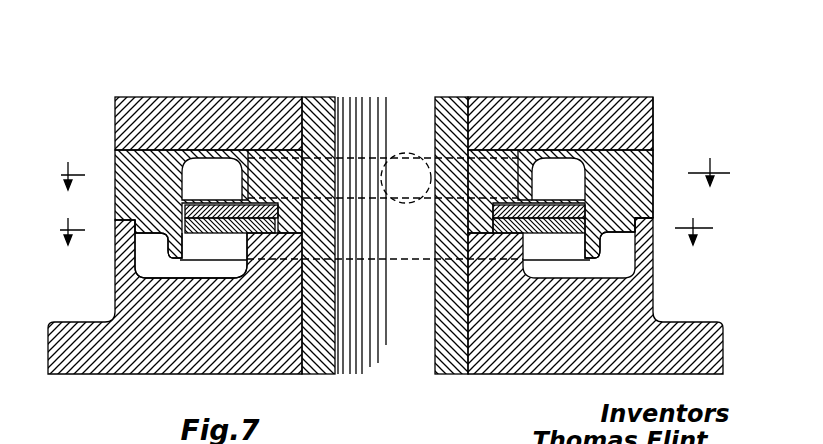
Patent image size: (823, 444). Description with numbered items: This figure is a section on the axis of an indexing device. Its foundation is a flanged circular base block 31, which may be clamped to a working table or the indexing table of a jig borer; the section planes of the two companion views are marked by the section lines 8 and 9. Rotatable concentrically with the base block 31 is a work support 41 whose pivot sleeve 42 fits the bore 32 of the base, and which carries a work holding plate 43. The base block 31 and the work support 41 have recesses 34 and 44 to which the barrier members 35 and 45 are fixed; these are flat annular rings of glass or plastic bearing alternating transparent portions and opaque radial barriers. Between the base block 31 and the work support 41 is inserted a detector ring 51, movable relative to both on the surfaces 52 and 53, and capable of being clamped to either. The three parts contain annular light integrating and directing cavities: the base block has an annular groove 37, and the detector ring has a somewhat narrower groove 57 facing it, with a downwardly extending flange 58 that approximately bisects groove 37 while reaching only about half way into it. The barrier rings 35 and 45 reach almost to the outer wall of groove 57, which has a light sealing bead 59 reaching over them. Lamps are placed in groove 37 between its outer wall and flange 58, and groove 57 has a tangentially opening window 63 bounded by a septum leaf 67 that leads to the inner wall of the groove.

The section line 8- 8 is at (392, 173).
The section line 9- 9 is at (380, 231).
The flanged circular base block 31 is at (107, 376).
The bore 32 is at (299, 343).
The recess 34 is at (497, 224).
The barrier member 35 is at (560, 244).
The annular groove 37 is at (153, 262).
The work support 41 is at (523, 95).
The pivot sleeve 42 is at (437, 305).
The work holding plate 43 is at (233, 106).
The recess 44 is at (495, 207).
The barrier member 45 is at (560, 187).
The detector ring 51 is at (658, 172).
The surface 52 is at (652, 122).
The surface 53 is at (642, 216).
The groove 57 is at (198, 170).
The downwardly extending flange 58 is at (180, 240).
The light sealing bead 59 is at (187, 203).
The window 63 is at (408, 153).
The septum leaf 67 is at (392, 157).